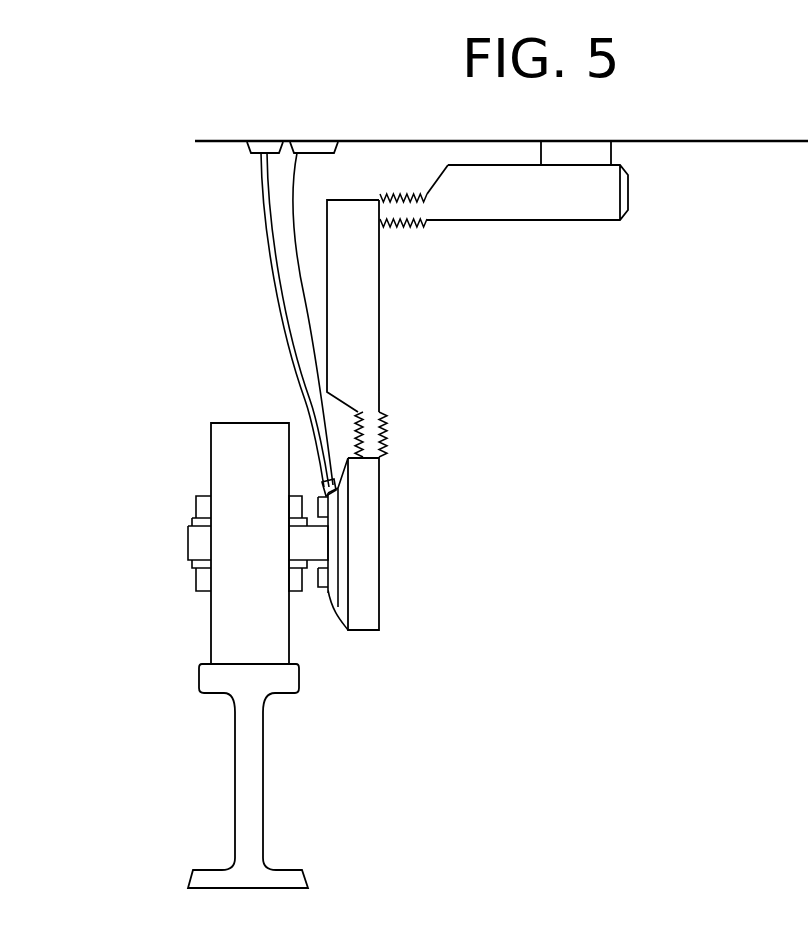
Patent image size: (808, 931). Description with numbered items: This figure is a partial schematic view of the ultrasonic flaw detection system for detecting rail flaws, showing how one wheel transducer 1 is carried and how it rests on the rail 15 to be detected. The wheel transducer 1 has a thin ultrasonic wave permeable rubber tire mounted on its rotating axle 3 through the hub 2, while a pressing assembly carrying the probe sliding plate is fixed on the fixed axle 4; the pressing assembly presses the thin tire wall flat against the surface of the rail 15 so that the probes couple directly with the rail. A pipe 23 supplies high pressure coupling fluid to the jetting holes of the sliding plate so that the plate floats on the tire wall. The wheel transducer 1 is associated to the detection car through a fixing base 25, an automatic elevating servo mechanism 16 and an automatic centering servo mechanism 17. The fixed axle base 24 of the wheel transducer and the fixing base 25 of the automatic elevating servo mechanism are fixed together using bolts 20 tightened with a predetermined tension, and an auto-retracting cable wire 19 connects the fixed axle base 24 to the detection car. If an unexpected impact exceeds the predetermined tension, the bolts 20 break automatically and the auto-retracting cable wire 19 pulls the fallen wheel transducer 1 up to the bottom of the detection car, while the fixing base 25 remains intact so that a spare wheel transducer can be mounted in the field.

The wheel transducer 1 is at (235, 460).
The hub 2 is at (198, 508).
The rotating axle 3 is at (193, 563).
The fixed axle 4 is at (198, 541).
The rail 15 is at (243, 758).
The automatic elevating servo mechanism 16 is at (345, 287).
The automatic centering servo mechanism 17 is at (607, 203).
The auto-retracting cable wire 19 is at (292, 212).
The bolts 20 is at (323, 507).
The pipe 23 is at (270, 287).
The fixed axle base 24 is at (333, 555).
The fixing base 25 is at (362, 483).